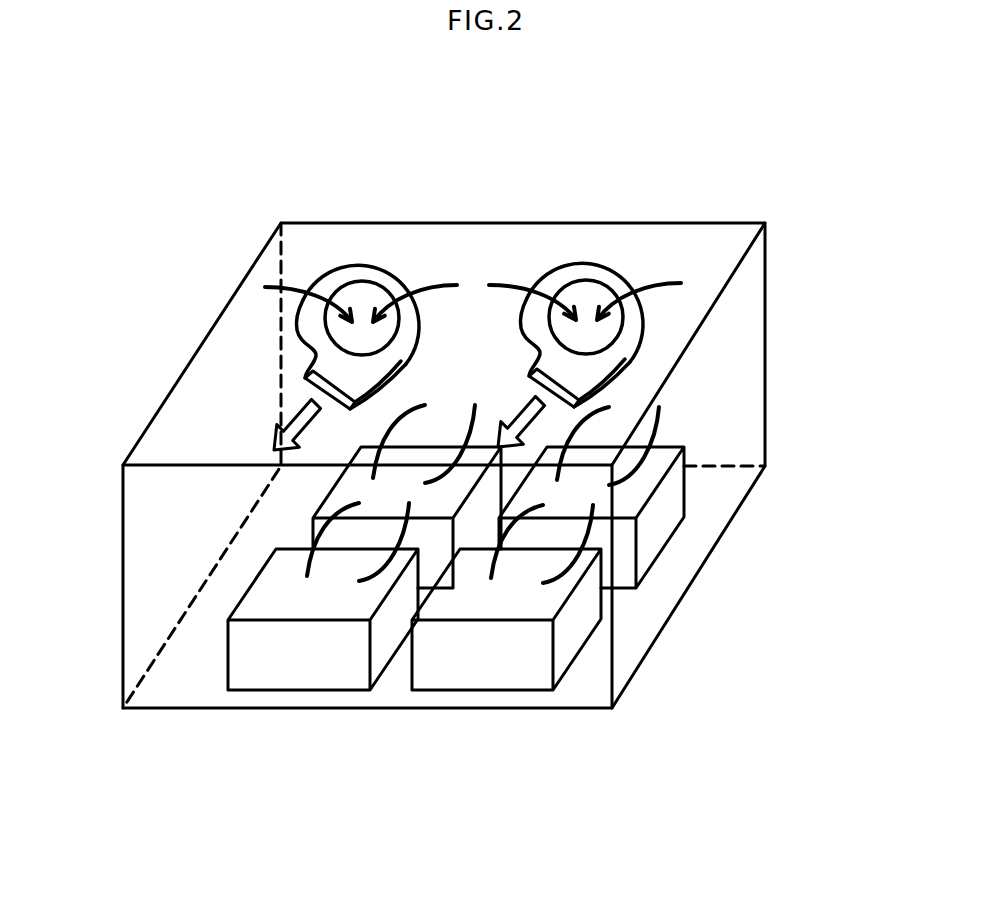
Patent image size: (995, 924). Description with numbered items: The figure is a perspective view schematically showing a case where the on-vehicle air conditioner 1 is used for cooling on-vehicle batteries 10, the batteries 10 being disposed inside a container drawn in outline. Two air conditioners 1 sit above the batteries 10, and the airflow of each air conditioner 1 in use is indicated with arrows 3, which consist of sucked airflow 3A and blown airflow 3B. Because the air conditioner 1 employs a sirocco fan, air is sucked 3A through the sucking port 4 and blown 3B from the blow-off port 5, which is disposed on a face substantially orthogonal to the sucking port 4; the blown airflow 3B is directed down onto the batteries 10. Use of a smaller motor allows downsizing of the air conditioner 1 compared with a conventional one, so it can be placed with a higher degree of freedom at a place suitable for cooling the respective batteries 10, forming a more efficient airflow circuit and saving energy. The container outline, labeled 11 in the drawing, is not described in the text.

The on-vehicle air conditioner 1 is at (388, 277).
The arrows 3 is at (100, 310).
The sucked airflow 3A is at (285, 291).
The blown airflow 3B is at (513, 413).
The sucking port 4 is at (357, 297).
The blow-off port 5 is at (560, 392).
The on-vehicle battery 10 is at (478, 663).
The housing 11 is at (757, 405).